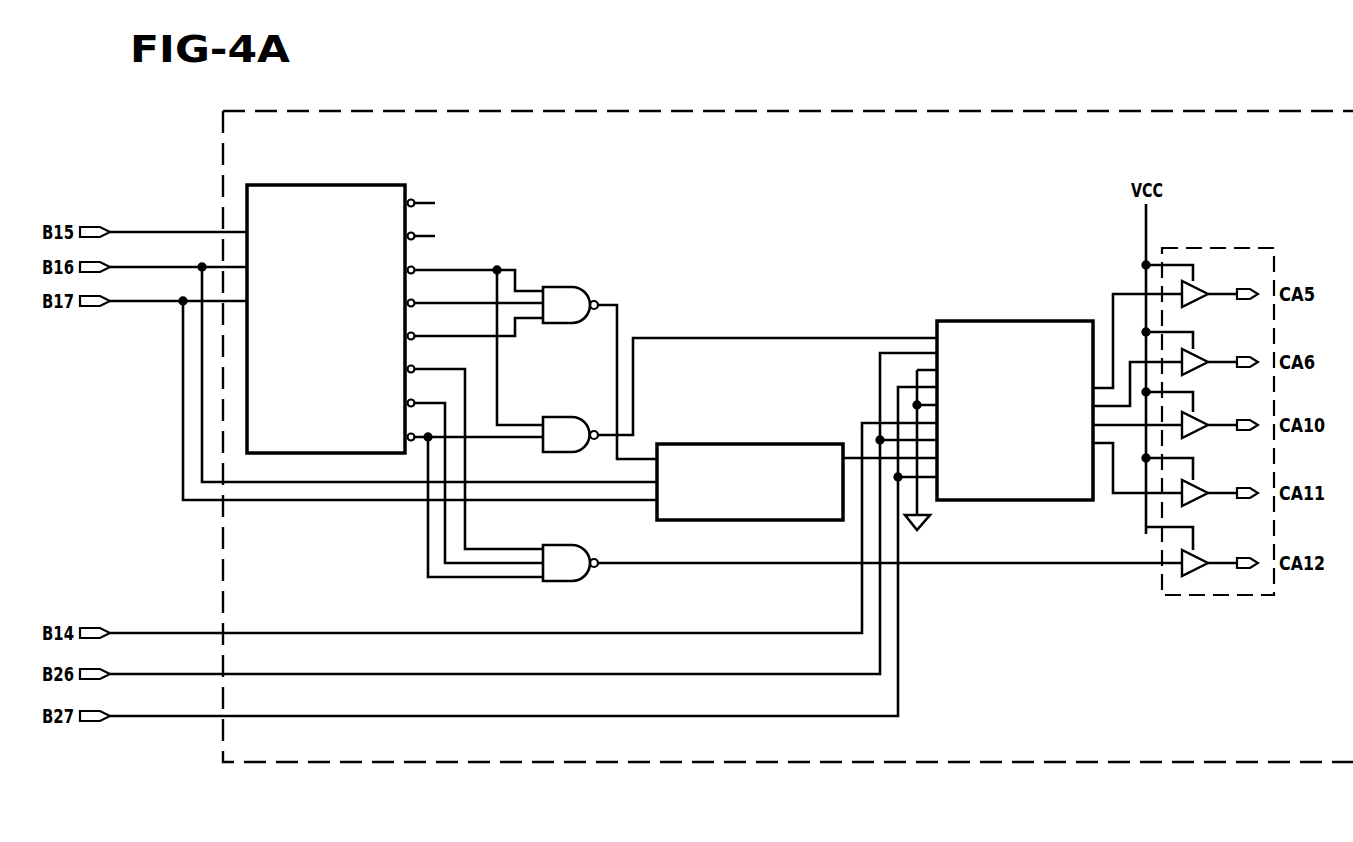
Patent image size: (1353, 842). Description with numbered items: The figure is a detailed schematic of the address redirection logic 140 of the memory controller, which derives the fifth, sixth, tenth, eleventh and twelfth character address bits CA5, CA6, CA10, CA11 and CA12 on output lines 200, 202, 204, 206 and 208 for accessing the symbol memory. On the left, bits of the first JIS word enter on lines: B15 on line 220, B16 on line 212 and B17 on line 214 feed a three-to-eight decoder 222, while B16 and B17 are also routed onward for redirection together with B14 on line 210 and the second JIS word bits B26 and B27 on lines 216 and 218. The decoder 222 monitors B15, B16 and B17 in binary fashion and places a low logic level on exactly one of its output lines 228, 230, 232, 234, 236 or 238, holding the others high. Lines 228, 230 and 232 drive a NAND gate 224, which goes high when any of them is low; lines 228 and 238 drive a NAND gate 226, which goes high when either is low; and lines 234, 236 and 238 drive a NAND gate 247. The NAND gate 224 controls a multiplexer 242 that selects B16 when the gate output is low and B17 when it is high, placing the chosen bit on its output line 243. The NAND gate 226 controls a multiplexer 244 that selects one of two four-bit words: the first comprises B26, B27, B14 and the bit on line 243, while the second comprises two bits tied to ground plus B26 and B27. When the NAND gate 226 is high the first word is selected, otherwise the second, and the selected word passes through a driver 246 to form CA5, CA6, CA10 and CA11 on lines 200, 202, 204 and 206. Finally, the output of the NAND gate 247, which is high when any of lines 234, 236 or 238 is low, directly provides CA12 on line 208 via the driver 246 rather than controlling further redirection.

The address redirection logic 140 is at (522, 110).
The line 200 is at (1215, 291).
The line 202 is at (1217, 358).
The line 204 is at (1217, 421).
The line 206 is at (1217, 489).
The line 208 is at (1217, 559).
The line 210 is at (140, 633).
The line 212 is at (133, 267).
The line 214 is at (133, 301).
The line 216 is at (145, 674).
The line 218 is at (140, 716).
The line 220 is at (133, 232).
The 3:8 decoder 222 is at (335, 185).
The NAND gate 224 is at (568, 289).
The NAND gate 226 is at (563, 418).
The output line 228 is at (440, 268).
The output line 230 is at (430, 301).
The output line 232 is at (430, 334).
The output line 234 is at (430, 367).
The output line 236 is at (415, 401).
The output line 238 is at (420, 445).
The multiplexer 242 is at (758, 447).
The output line 243 is at (853, 453).
The multiplexer 244 is at (1007, 321).
The driver 246 is at (1195, 248).
The NAND gate 247 is at (565, 548).